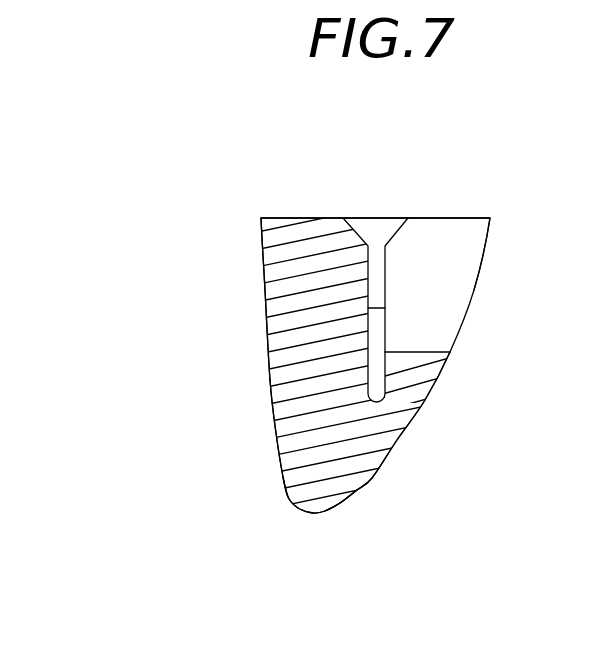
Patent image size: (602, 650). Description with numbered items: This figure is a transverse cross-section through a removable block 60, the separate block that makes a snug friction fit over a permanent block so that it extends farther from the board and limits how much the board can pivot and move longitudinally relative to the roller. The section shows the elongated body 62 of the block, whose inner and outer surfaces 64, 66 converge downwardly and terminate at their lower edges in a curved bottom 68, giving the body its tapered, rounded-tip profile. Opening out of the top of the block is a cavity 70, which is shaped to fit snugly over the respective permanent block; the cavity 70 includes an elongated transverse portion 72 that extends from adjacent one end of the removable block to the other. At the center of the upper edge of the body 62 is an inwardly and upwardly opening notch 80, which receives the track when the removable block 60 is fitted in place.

The removable block 60 is at (375, 372).
The elongated body 62 is at (275, 433).
The inner surface 64 is at (408, 436).
The outer surface 66 is at (268, 295).
The curved bottom 68 is at (315, 514).
The cavity 70 is at (443, 288).
The elongated transverse portion 72 is at (601, 331).
The notch 80 is at (467, 243).